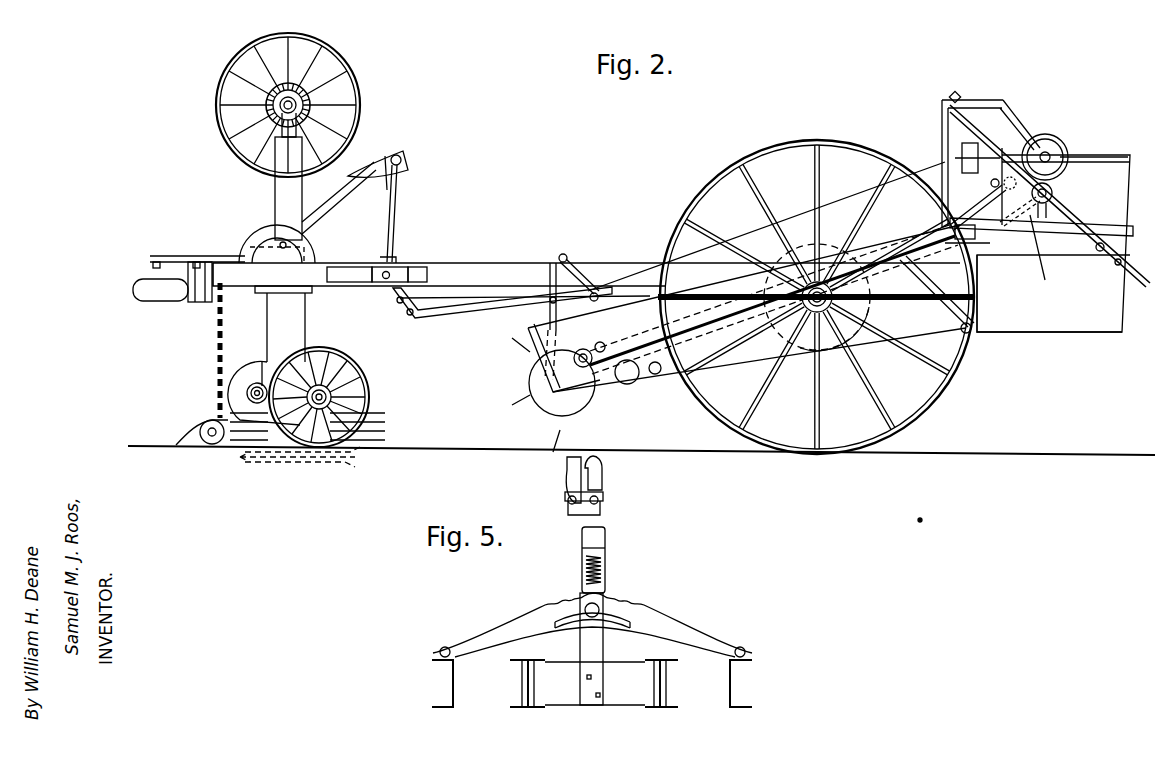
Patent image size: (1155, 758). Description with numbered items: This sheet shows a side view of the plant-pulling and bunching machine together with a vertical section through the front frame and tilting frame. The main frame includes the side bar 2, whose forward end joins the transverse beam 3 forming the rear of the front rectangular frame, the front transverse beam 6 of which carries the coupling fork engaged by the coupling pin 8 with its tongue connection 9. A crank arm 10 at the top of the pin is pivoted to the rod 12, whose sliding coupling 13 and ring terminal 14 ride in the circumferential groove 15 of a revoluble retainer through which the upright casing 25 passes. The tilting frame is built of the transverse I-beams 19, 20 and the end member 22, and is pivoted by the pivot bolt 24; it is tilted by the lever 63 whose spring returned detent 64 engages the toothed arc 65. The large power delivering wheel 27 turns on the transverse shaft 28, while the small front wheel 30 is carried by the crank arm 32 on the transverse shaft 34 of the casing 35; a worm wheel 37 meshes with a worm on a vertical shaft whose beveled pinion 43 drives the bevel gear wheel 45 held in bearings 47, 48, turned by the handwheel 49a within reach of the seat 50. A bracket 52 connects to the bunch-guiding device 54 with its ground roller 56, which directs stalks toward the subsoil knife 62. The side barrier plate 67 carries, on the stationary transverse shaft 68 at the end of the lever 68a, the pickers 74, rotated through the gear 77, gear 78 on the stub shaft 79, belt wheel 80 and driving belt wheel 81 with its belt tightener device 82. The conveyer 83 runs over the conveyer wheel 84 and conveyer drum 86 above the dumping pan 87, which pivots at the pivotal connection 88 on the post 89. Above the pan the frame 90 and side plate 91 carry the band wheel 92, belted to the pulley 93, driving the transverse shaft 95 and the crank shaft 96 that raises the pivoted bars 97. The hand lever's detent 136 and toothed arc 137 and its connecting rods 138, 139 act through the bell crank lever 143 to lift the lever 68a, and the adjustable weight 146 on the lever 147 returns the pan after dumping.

In FIG. 2, the side bar 2 is at (487, 264).
In FIG. 5, the transverse beam 3 is at (736, 682).
In FIG. 5, the front transverse beam 6 is at (452, 682).
In FIG. 2, the coupling pin 8 is at (189, 271).
In FIG. 2, the tongue connection 9 is at (155, 293).
In FIG. 2, the crank arm 10 is at (171, 255).
In FIG. 2, the rod 12 is at (203, 255).
In FIG. 2, the sliding coupling 13 is at (246, 258).
In FIG. 2, the ring terminal 14 is at (318, 284).
In FIG. 2, the circumferential groove 15 is at (318, 250).
In FIG. 5, the transverse I-beam 19 is at (528, 682).
In FIG. 5, the transverse I-beam 20 is at (664, 682).
In FIG. 2, the end member 22 is at (305, 248).
In FIG. 2, the pivot bolt 24 is at (290, 244).
In FIG. 2, the upright casing 25 is at (296, 324).
In FIG. 2, the power delivering wheel 27 is at (810, 142).
In FIG. 2, the transverse shaft 28 is at (812, 345).
In FIG. 2, the front wheel 30 is at (352, 372).
In FIG. 2, the crank arm 32 is at (258, 375).
In FIG. 2, the transverse shaft 34 is at (245, 388).
In FIG. 2, the upright casing 35 is at (282, 198).
In FIG. 2, the worm wheel 37 is at (242, 380).
In FIG. 2, the beveled pinion 43 is at (300, 128).
In FIG. 2, the bevel gear wheel 45 is at (312, 96).
In FIG. 2, the bearing 47 is at (298, 104).
In FIG. 2, the bearing 48 is at (287, 123).
In FIG. 2, the handwheel 49a is at (352, 60).
In FIG. 2, the seat 50 is at (386, 170).
In FIG. 2, the bracket 52 is at (217, 408).
In FIG. 2, the bunch-guiding device 54 is at (192, 440).
In FIG. 2, the roller 56 is at (212, 444).
In FIG. 2, the subsoil knife 62 is at (278, 458).
In FIG. 5, the lever 63 is at (586, 648).
In FIG. 5, the spring returned detent 64 is at (608, 572).
In FIG. 5, the toothed arc 65 is at (658, 615).
In FIG. 2, the side barrier plate 67 is at (715, 262).
In FIG. 2, the stationary transverse shaft 68 is at (545, 410).
In FIG. 2, the lever 68a is at (558, 255).
In FIG. 2, the picker 74 is at (957, 245).
In FIG. 2, the gear 77 is at (533, 378).
In FIG. 2, the gear 78 is at (588, 350).
In FIG. 2, the stub shaft 79 is at (600, 386).
In FIG. 2, the belt wheel 80 is at (606, 345).
In FIG. 2, the driving belt wheel 81 is at (830, 244).
In FIG. 2, the belt tightener device 82 is at (695, 294).
In FIG. 2, the conveyer 83 is at (658, 376).
In FIG. 2, the conveyer wheel 84 is at (632, 382).
In FIG. 2, the conveyer drum 86 is at (985, 244).
In FIG. 2, the dumping pan 87 is at (1055, 266).
In FIG. 2, the pivotal connection 88 is at (972, 332).
In FIG. 2, the post 89 is at (935, 292).
In FIG. 2, the frame 90 is at (943, 121).
In FIG. 2, the side plate 91 is at (1044, 257).
In FIG. 2, the band wheel 92 is at (1058, 143).
In FIG. 2, the pulley 93 is at (968, 224).
In FIG. 2, the transverse shaft 95 is at (1068, 156).
In FIG. 2, the crank shaft 96 is at (1054, 192).
In FIG. 2, the bar 97 is at (960, 96).
In FIG. 2, the spring returned detent 136 is at (394, 256).
In FIG. 2, the toothed arc 137 is at (395, 262).
In FIG. 2, the connecting rod 138 is at (594, 285).
In FIG. 2, the connecting rod 139 is at (488, 320).
In FIG. 2, the bell crank lever 143 is at (549, 275).
In FIG. 2, the adjustable weight 146 is at (970, 150).
In FIG. 2, the lever 147 is at (1053, 243).